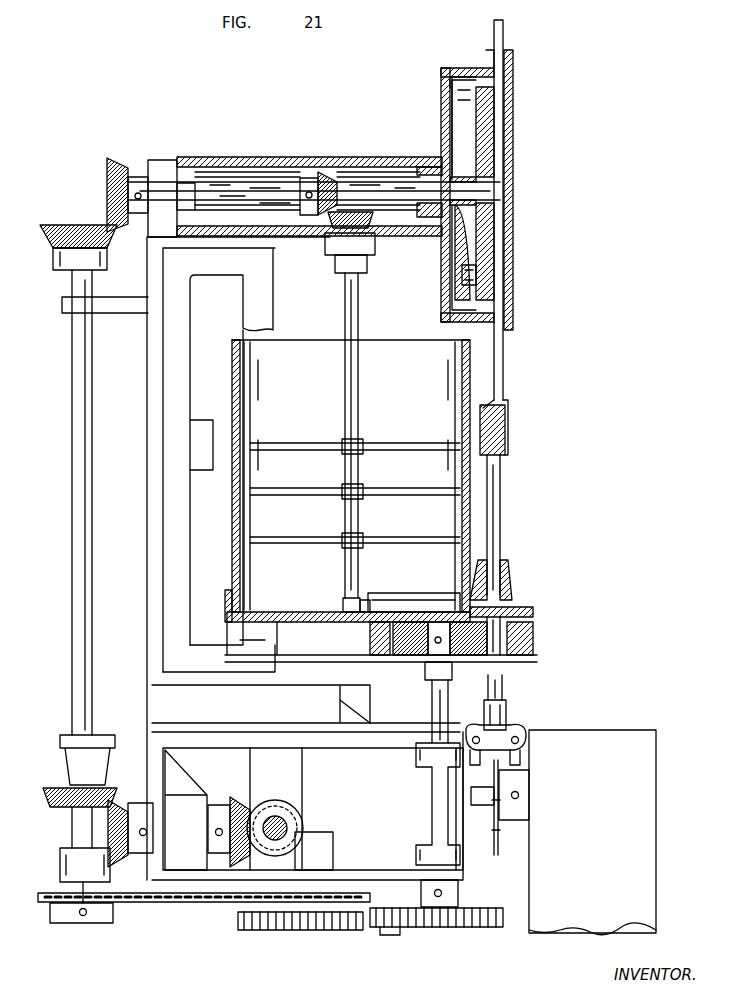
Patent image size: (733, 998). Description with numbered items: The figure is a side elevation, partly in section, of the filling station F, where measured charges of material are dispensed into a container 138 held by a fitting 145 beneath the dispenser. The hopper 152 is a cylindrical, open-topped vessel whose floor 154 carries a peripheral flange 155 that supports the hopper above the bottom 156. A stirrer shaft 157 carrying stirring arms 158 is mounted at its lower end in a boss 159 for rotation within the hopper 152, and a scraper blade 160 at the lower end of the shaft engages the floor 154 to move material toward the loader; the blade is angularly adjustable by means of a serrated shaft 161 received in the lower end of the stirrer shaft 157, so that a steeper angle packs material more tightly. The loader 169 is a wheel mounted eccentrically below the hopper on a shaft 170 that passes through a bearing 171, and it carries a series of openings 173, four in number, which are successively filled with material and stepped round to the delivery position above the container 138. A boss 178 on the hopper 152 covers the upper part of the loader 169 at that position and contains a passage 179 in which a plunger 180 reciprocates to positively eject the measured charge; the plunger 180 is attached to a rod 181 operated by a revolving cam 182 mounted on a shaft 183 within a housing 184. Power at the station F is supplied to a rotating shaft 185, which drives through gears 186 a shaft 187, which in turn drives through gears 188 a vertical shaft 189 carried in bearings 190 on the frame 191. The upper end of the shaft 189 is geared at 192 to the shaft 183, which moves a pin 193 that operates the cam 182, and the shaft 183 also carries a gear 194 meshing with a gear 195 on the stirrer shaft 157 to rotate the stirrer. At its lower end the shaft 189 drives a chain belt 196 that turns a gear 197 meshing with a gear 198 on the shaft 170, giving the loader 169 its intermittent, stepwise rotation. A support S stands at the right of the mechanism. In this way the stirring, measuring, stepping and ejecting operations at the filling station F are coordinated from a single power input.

The container 138 is at (502, 683).
The clevis fitting 145 is at (514, 712).
The hopper 152 is at (233, 535).
The floor 154 is at (300, 612).
The peripheral flange 155 is at (228, 615).
The bottom 156 is at (318, 662).
The shaft 157 is at (358, 420).
The stirring arms 158 is at (420, 450).
The boss 159 is at (346, 598).
The scraper blade 160 is at (445, 595).
The shaft 161 is at (365, 600).
The loader 169 is at (505, 628).
The shaft 170 is at (440, 700).
The bearing 171 is at (457, 676).
The openings 173 is at (385, 630).
The boss 178 is at (512, 578).
The passage 179 is at (515, 607).
The plunger 180 is at (500, 505).
The rod 181 is at (503, 365).
The cam 182 is at (488, 140).
The shaft 183 is at (493, 190).
The housing 184 is at (462, 68).
The rotating shaft 185 is at (300, 830).
The gears 186 is at (243, 800).
The shaft 187 is at (147, 805).
The gears 188 is at (45, 800).
The shaft 189 is at (72, 620).
The bearings 190 is at (62, 301).
The frame 191 is at (153, 441).
The gearing 192 is at (68, 228).
The pin 193 is at (462, 277).
The gear 194 is at (330, 172).
The gear 195 is at (375, 232).
The chain belt 196 is at (210, 903).
The gear 197 is at (290, 930).
The gear 198 is at (455, 928).
The filling station F is at (510, 407).
The support S is at (656, 880).